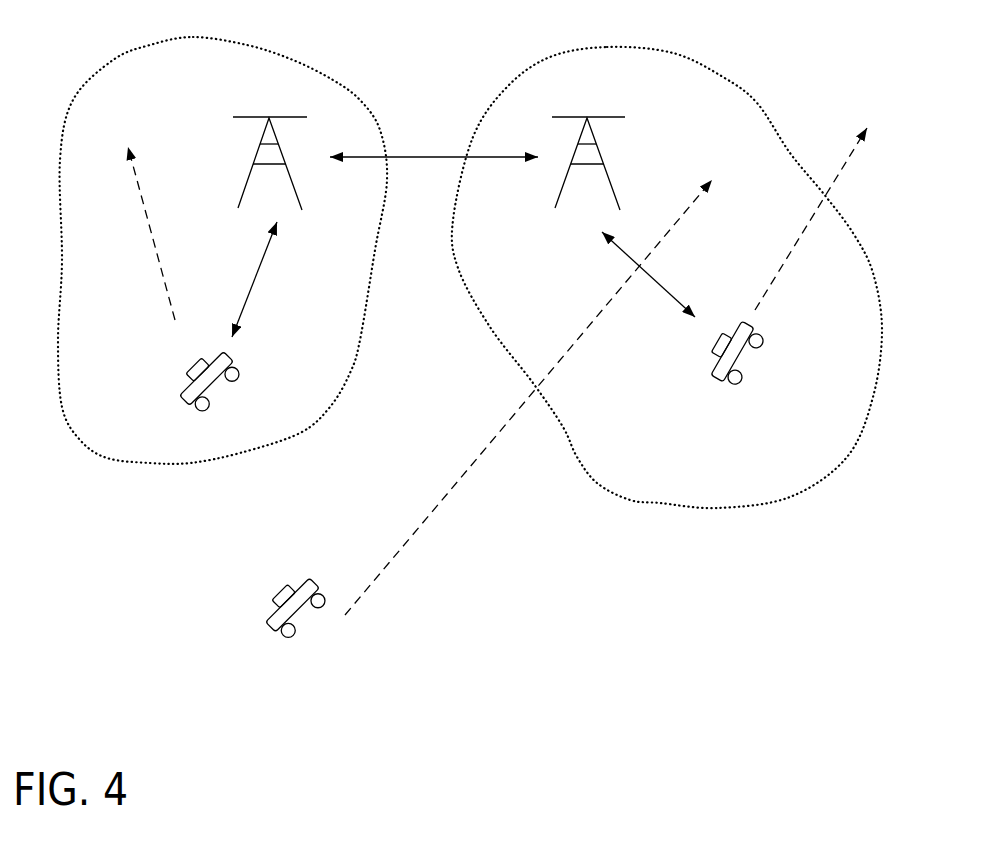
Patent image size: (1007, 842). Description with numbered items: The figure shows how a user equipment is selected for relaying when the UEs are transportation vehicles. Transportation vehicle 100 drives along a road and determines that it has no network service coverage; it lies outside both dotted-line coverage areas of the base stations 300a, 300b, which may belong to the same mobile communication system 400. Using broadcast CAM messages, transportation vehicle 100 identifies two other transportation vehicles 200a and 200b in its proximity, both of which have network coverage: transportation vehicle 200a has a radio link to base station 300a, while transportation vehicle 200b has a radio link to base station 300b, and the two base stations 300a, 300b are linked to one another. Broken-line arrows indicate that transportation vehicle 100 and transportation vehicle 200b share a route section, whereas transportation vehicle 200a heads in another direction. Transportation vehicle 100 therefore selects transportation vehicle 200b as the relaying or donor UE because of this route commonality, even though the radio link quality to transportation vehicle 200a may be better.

The transportation vehicle 100 is at (283, 598).
The transportation vehicle 200a is at (198, 373).
The transportation vehicle 200b is at (735, 353).
The base station 300a is at (242, 193).
The base station 300b is at (612, 183).
The mobile communication system 400 is at (463, 735).